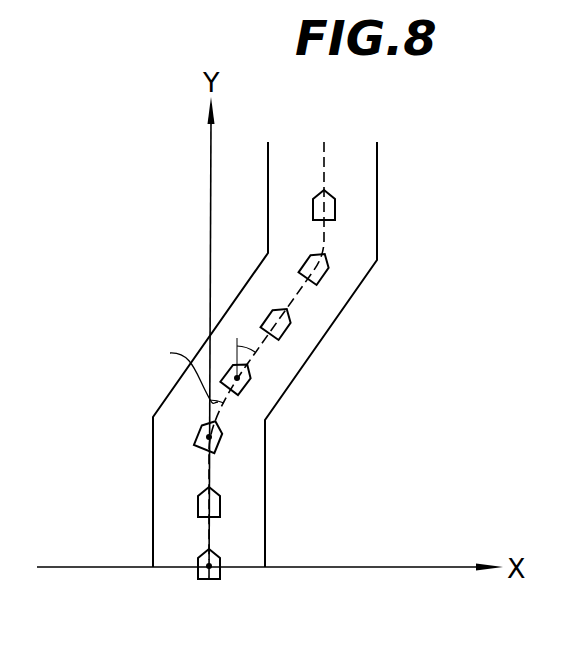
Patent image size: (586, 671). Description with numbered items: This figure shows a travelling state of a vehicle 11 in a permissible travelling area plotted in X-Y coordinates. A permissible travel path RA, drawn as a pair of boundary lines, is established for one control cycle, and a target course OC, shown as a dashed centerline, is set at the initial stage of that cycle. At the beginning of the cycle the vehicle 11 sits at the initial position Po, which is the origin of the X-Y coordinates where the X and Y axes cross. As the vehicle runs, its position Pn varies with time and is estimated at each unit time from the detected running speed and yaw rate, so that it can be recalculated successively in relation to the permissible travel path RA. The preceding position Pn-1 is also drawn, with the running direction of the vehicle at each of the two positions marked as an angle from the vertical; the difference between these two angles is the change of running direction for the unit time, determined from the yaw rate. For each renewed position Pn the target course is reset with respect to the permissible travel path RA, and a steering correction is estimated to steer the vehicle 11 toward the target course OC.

The vehicle 11 is at (198, 571).
The target course OC is at (308, 280).
The permissible travel path RA is at (310, 328).
The vehicle position Pn is at (250, 385).
The vehicle position at the preceding unit time Pn-1 is at (222, 444).
The initial vehicle position Po is at (207, 580).